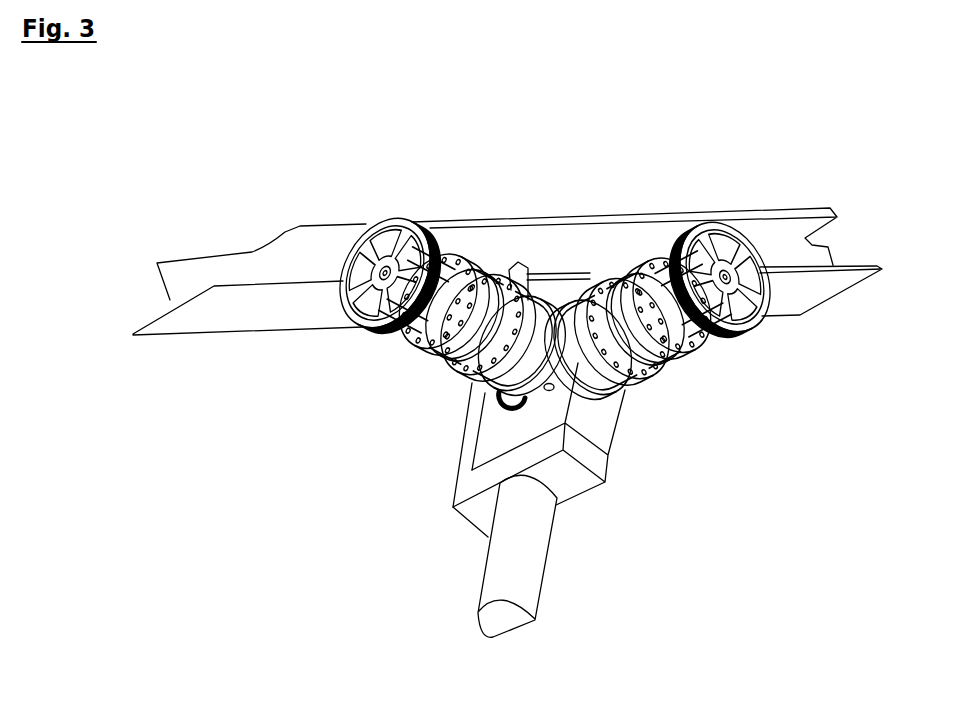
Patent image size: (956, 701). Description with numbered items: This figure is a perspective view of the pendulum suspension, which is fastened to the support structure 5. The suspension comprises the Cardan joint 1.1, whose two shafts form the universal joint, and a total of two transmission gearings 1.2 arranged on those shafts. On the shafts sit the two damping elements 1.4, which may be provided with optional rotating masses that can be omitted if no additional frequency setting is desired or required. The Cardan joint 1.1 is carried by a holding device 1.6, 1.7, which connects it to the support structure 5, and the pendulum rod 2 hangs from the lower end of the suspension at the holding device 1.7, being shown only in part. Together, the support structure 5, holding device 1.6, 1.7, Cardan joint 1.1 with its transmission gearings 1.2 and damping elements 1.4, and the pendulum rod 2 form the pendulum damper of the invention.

The Cardan joint 1.1 is at (553, 370).
The transmission gearing 1.2 is at (687, 220).
The damping element 1.4 is at (372, 224).
The holding device 1.6 is at (602, 367).
The holding device 1.7 is at (565, 420).
The pendulum rod 2 is at (538, 553).
The support structure 5 is at (500, 222).